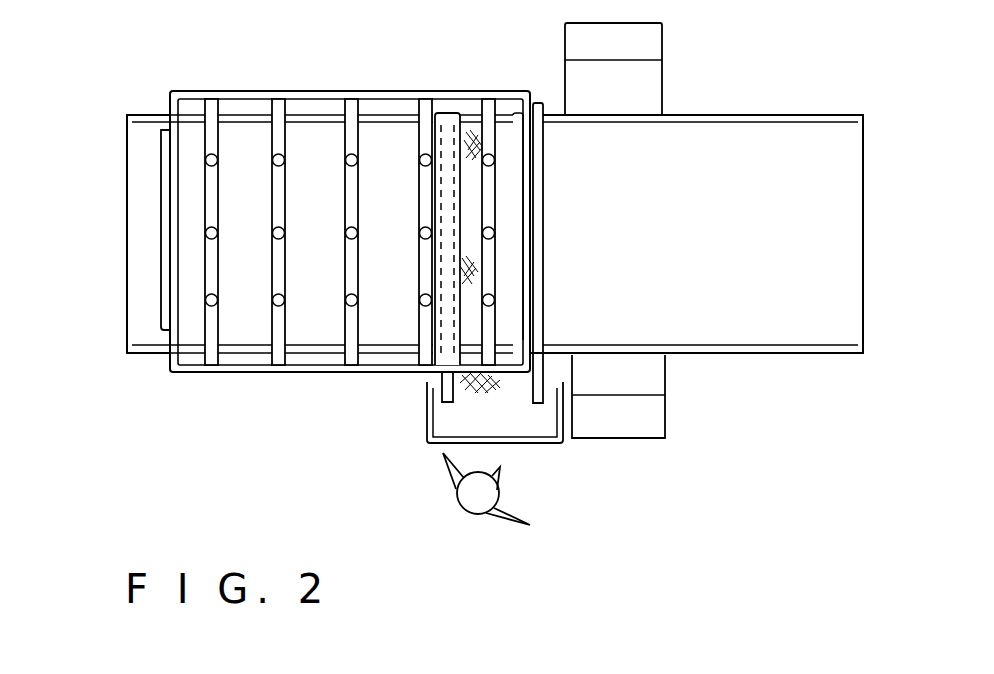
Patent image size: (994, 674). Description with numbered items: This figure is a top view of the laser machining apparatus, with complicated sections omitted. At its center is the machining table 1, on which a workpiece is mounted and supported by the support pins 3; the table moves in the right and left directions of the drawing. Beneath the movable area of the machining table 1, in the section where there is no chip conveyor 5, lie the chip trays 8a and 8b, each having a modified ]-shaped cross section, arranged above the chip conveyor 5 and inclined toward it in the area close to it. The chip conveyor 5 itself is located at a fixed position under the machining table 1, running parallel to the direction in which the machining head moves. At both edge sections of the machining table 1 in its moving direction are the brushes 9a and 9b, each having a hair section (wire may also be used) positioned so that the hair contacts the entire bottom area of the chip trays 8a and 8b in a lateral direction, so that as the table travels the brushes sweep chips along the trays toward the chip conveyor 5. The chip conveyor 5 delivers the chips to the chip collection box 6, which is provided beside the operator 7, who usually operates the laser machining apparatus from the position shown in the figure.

The machining table 1 is at (248, 92).
The support pins 3 is at (279, 160).
The chip conveyor 5 is at (517, 382).
The chip collection box 6 is at (427, 425).
The operator 7 is at (470, 502).
The chip tray 8a is at (139, 170).
The chip tray 8b is at (758, 140).
The brush 9a is at (163, 253).
The brush 9b is at (537, 260).